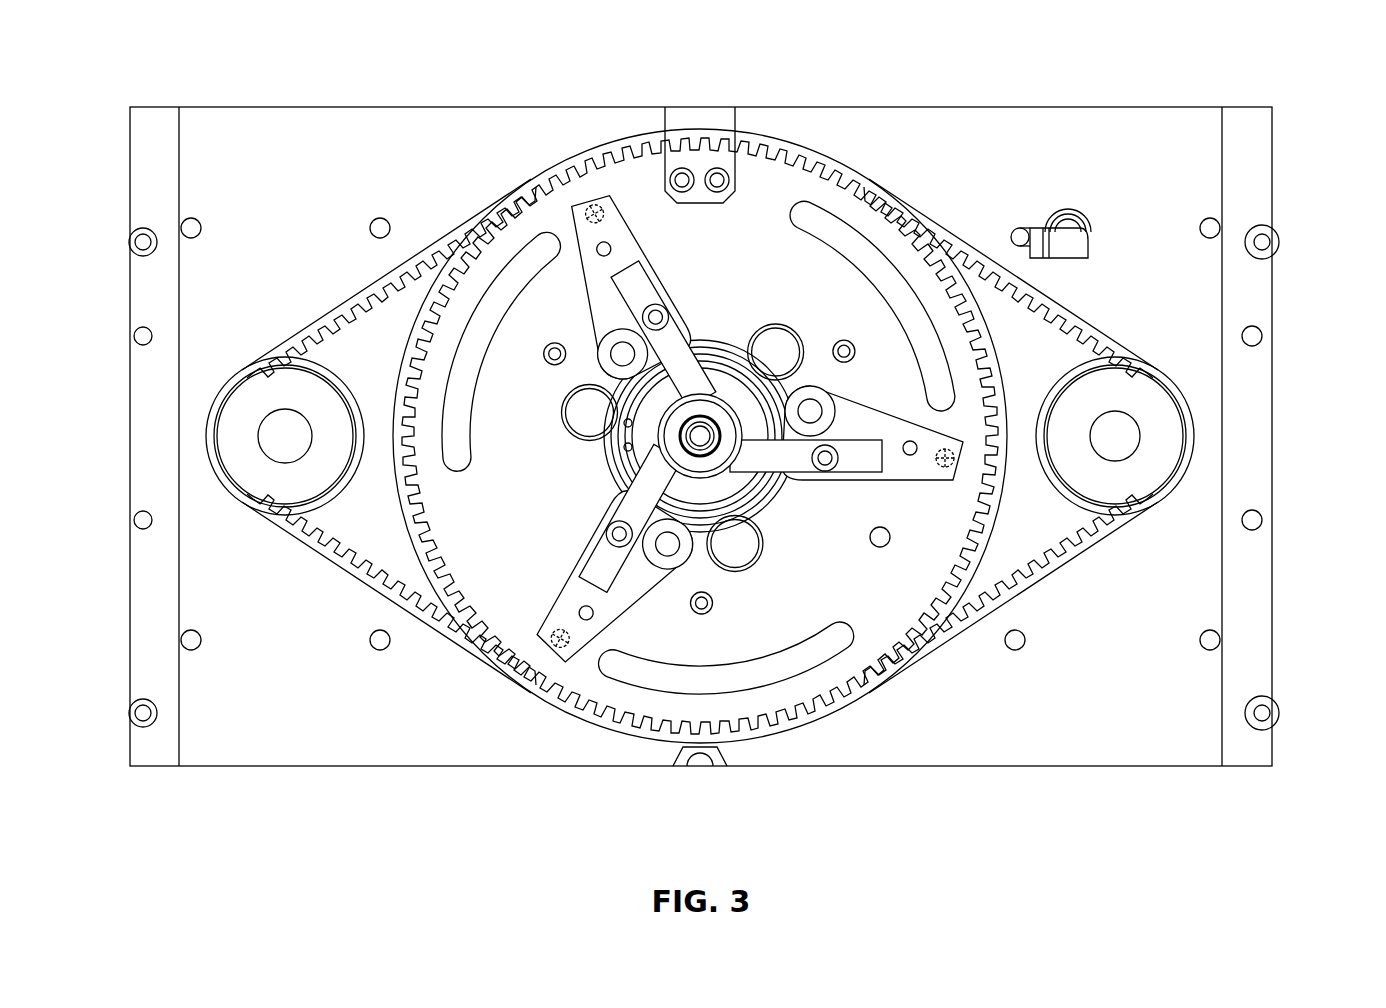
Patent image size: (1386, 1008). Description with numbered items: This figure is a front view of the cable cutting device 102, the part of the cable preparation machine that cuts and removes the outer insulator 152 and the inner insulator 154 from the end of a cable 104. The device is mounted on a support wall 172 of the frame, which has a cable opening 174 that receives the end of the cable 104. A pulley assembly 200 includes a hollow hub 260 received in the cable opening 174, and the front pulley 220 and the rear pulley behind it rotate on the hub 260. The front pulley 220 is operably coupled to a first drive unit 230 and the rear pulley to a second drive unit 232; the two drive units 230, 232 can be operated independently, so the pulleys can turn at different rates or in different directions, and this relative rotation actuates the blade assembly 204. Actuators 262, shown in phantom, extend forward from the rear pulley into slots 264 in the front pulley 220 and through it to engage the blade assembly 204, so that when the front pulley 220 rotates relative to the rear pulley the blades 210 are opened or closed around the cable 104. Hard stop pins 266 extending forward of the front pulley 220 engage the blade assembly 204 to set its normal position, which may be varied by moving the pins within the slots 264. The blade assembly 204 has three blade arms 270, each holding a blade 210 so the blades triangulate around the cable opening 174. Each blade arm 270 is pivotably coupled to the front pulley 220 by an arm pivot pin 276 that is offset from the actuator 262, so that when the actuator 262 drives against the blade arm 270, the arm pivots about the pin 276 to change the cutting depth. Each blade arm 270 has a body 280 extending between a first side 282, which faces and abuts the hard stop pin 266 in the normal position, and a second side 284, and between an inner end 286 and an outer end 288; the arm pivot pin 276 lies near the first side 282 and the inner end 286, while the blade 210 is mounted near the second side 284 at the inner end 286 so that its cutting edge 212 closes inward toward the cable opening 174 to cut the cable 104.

The cable cutting device 102 is at (854, 44).
The cable 104 is at (726, 446).
The outer insulator 152 is at (737, 452).
The inner insulator 154 is at (712, 453).
The support wall 172 is at (1058, 128).
The cable opening 174 is at (733, 390).
The pulley assembly 200 is at (622, 178).
The blade assembly 204 is at (578, 277).
The blade 210 is at (703, 425).
The cutting edge 212 is at (713, 430).
The front pulley 220 is at (508, 607).
The first drive unit 230 is at (247, 458).
The second drive unit 232 is at (1148, 470).
The hub 260 is at (703, 447).
The actuator 262 is at (590, 206).
The slot 264 is at (552, 230).
The hard stop pin 266 is at (554, 353).
The blade arm 270 is at (622, 243).
The arm pivot pin 276 is at (621, 356).
The body 280 is at (627, 587).
The first side 282 is at (600, 633).
The second side 284 is at (558, 587).
The inner end 286 is at (702, 462).
The outer end 288 is at (547, 652).